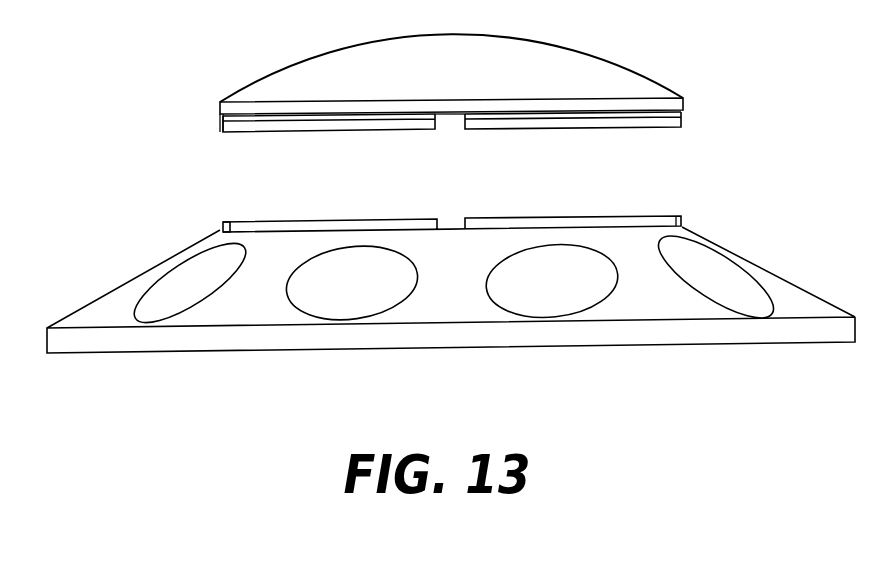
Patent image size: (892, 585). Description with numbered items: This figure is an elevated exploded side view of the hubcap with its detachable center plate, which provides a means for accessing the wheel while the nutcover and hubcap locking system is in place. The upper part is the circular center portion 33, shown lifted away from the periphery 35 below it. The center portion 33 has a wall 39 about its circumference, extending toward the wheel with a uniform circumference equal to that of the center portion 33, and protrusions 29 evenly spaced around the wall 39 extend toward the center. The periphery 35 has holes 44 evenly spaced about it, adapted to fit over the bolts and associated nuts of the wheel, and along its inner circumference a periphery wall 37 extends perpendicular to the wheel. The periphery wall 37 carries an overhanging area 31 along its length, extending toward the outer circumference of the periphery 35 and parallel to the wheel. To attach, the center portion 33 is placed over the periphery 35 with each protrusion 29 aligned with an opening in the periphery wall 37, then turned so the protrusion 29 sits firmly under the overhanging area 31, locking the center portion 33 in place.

The center portion 33 is at (572, 58).
The wall 39 is at (221, 128).
The protrusions 29 is at (228, 132).
The overhanging area 31 is at (223, 227).
The periphery wall 37 is at (252, 225).
The periphery 35 is at (457, 312).
The holes 44 is at (577, 305).